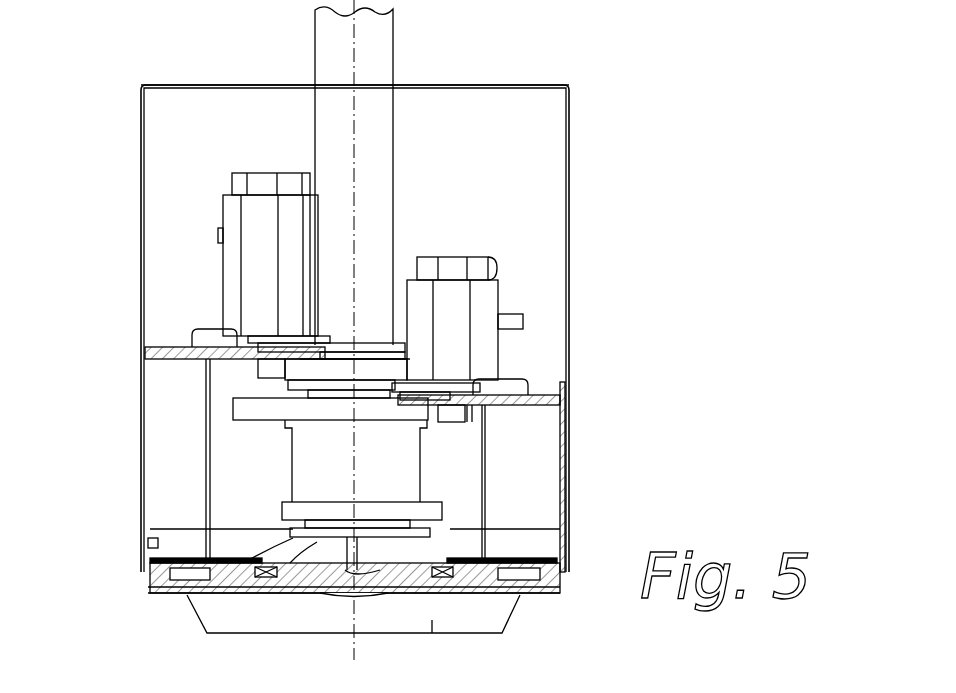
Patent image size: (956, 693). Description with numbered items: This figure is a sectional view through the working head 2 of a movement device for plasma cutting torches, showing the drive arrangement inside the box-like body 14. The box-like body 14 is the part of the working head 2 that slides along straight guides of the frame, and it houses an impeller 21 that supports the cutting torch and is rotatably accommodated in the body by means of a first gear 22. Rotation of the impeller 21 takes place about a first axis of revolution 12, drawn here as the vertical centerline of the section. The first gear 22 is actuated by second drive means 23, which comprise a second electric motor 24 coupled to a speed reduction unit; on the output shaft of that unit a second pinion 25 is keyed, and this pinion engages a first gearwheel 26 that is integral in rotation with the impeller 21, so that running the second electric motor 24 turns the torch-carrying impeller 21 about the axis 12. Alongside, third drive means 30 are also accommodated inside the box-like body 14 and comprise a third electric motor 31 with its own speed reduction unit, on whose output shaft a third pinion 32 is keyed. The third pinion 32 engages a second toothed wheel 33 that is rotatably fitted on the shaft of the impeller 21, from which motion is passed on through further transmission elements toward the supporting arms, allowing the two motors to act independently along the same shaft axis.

The working head 2 is at (570, 189).
The first axis of revolution 12 is at (355, 36).
The box-like body 14 is at (568, 118).
The impeller 21 is at (512, 618).
The first gear 22 is at (258, 375).
The second drive means 23 is at (245, 197).
The second electric motor 24 is at (262, 205).
The second pinion 25 is at (270, 365).
The first gearwheel 26 is at (367, 360).
The third drive means 30 is at (514, 331).
The third electric motor 31 is at (460, 300).
The third pinion 32 is at (458, 415).
The second toothed wheel 33 is at (305, 408).